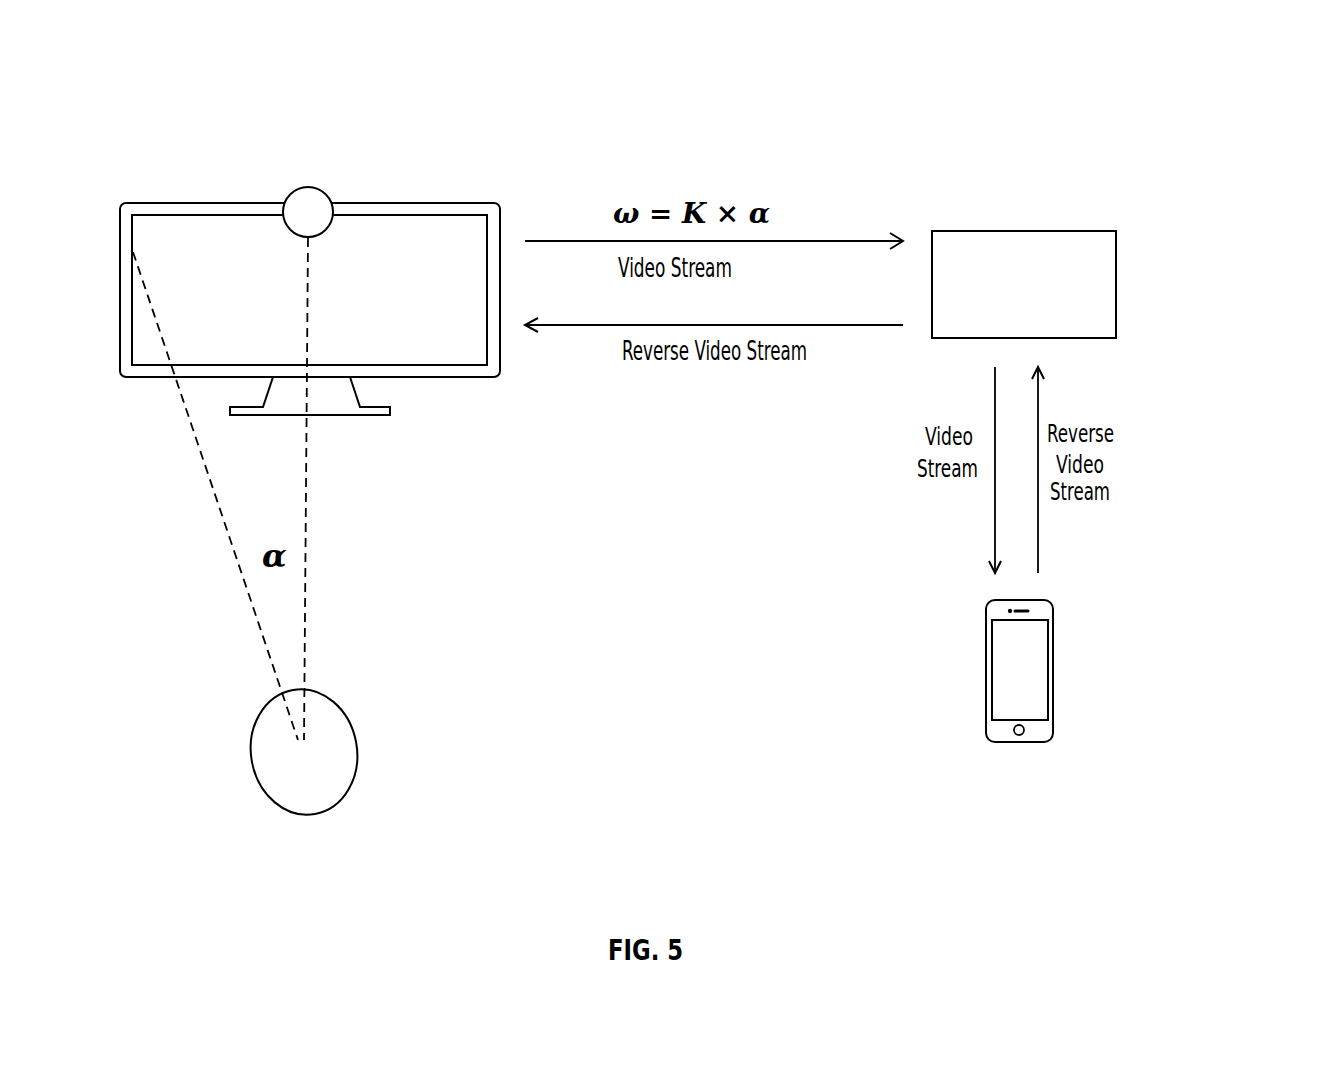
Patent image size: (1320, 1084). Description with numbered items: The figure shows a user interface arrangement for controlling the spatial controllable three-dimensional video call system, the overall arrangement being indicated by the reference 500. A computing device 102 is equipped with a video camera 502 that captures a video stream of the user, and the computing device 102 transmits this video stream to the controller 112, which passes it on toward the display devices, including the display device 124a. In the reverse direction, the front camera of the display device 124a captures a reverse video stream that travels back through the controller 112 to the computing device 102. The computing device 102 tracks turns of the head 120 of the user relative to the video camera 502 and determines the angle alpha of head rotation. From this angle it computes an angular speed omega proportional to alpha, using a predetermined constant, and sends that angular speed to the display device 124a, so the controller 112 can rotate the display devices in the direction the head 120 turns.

The system 500 is at (1202, 110).
The camera 502 is at (295, 197).
The computing device 102 is at (415, 306).
The controller 112 is at (1087, 298).
The head 120 is at (343, 766).
The mobile device 124a is at (1010, 636).